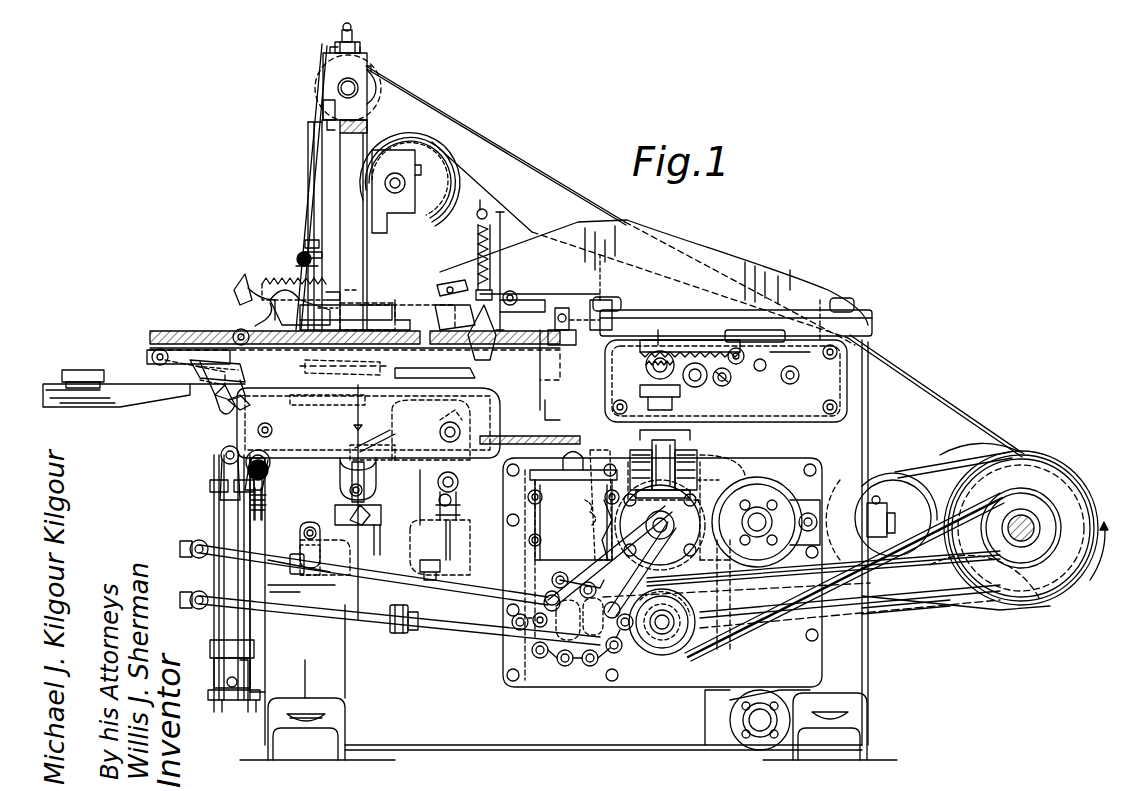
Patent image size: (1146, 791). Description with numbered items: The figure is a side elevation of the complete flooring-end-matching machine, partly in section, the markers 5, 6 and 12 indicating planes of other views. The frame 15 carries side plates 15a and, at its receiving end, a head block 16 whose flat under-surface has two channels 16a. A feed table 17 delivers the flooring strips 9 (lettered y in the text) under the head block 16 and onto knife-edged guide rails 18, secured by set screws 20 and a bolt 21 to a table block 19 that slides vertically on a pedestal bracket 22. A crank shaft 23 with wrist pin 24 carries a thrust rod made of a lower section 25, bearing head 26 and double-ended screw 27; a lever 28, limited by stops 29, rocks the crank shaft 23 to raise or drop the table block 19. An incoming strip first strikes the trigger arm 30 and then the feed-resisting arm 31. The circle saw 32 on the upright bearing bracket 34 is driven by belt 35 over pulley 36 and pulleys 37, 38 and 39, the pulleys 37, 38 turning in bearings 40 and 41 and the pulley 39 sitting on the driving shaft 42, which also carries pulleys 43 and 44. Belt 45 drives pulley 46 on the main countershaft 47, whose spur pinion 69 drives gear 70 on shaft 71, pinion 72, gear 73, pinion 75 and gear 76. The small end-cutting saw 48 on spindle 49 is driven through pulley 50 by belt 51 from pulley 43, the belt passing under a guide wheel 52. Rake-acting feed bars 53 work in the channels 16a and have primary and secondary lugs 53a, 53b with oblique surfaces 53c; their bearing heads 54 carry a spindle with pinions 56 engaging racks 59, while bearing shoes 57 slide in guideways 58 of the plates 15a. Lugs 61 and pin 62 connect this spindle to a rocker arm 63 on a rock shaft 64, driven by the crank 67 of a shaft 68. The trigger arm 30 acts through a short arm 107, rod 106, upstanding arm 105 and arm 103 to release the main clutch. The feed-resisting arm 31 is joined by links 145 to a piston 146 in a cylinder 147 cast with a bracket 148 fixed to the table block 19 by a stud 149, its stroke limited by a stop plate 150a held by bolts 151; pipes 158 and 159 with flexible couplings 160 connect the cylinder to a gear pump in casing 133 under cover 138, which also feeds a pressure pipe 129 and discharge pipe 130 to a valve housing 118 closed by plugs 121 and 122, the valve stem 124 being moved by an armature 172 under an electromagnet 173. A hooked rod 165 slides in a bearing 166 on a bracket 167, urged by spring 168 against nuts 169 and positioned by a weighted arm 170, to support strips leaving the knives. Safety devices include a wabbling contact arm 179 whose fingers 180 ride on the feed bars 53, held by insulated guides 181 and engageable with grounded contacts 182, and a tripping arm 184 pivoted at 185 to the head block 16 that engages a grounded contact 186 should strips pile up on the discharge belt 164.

The section line 5 is at (658, 420).
The carriage guide 6 is at (398, 300).
The work piece / stock 9 is at (80, 380).
The center line 12 is at (362, 400).
The frame 15 is at (862, 437).
The plates 15a is at (860, 378).
The head block 16 is at (205, 332).
The longitudinal channels 16a is at (150, 353).
The feed table 17 is at (152, 403).
The knife-edged guide rails 18 is at (398, 455).
The table block 19 is at (372, 485).
The set screws 20 is at (445, 510).
The nut-equipped bolt 21 is at (460, 423).
The pedestal bracket 22 is at (415, 545).
The crank shaft 23 is at (378, 510).
The wrist pin 24 is at (328, 557).
The lower section of thrust rod 25 is at (335, 470).
The bearing head 26 is at (362, 450).
The double-ended screw 27 is at (325, 398).
The lever 28 is at (250, 465).
The stops 29 is at (295, 498).
The trigger arm 30 is at (255, 336).
The feed-resisting arm 31 is at (270, 395).
The circle saw 32 is at (262, 280).
The bearing bracket 34 is at (360, 210).
The belt 35 is at (310, 163).
The pulley 36 is at (330, 307).
The pulley 37 is at (375, 88).
The pulley 38 is at (432, 168).
The pulley 39 is at (995, 455).
The bearing 40 is at (330, 93).
The bearing 41 is at (398, 150).
The driving shaft 42 is at (1030, 520).
The pulley 43 is at (1085, 505).
The pulley 44 is at (1050, 515).
The belt 45 is at (965, 580).
The driving pulley 46 is at (655, 650).
The main countershaft 47 is at (705, 635).
The small circle saw 48 is at (478, 400).
The upright spindle 49 is at (480, 372).
The pulley 50 is at (470, 630).
The belt 51 is at (978, 600).
The guide wheel 52 is at (902, 500).
The feed bars 53 is at (280, 305).
The primary driving hooks 53a is at (185, 371).
The secondary driving hooks 53b is at (300, 410).
The oblique lower surfaces 53c is at (230, 425).
The bearing heads 54 is at (672, 338).
The spur pinions 56 is at (650, 410).
The bearing shoes 57 is at (648, 312).
The guideways 58 is at (835, 378).
The racks 59 is at (740, 345).
The lugs 61 is at (680, 395).
The pin 62 is at (705, 385).
The rocker arm 63 is at (680, 470).
The rock shaft 64 is at (745, 728).
The crank 67 is at (742, 495).
The shaft 68 is at (765, 518).
The spur pinion 69 is at (663, 617).
The spur gear 70 is at (614, 650).
The shaft 71 is at (548, 652).
The spur pinion 72 is at (556, 622).
The spur gear 73 is at (585, 580).
The spur pinion 75 is at (572, 498).
The spur gear 76 is at (595, 510).
The arm 103 is at (590, 320).
The upstanding arm 105 is at (560, 310).
The rod 106 is at (250, 285).
The short arm 107 is at (245, 270).
The valve housing 118 is at (660, 525).
The plug 121 is at (717, 562).
The plug 122 is at (712, 526).
The valve stem 124 is at (700, 452).
The pressure pipe 129 is at (590, 552).
The discharge pipe 130 is at (600, 610).
The pump casing 133 is at (548, 520).
The cover 138 is at (662, 571).
The links 145 is at (222, 503).
The piston 146 is at (220, 676).
The cylinder 147 is at (218, 573).
The bracket 148 is at (276, 590).
The nut-equipped stud 149 is at (278, 576).
The stop plate 150a is at (242, 700).
The nut-equipped bolts 151 is at (258, 682).
The pressure pipe 158 is at (335, 590).
The return pipe 159 is at (370, 612).
The flexible couplings 160 is at (400, 628).
The discharge belt 164 is at (520, 440).
The rod 165 is at (500, 300).
The bearing 166 is at (492, 260).
The bracket 167 is at (445, 305).
The coiled spring 168 is at (486, 228).
The nuts 169 is at (478, 216).
The weighted arm 170 is at (518, 296).
The armature 172 is at (628, 462).
The electromagnet 173 is at (711, 485).
The wabbling contact arm 179 is at (340, 300).
The fingers 180 is at (330, 300).
The insulated guides 181 is at (300, 255).
The grounded contacts 182 is at (305, 240).
The tripping contact arm 184 is at (545, 400).
The pivot 185 is at (540, 380).
The fixed grounded contact 186 is at (598, 300).